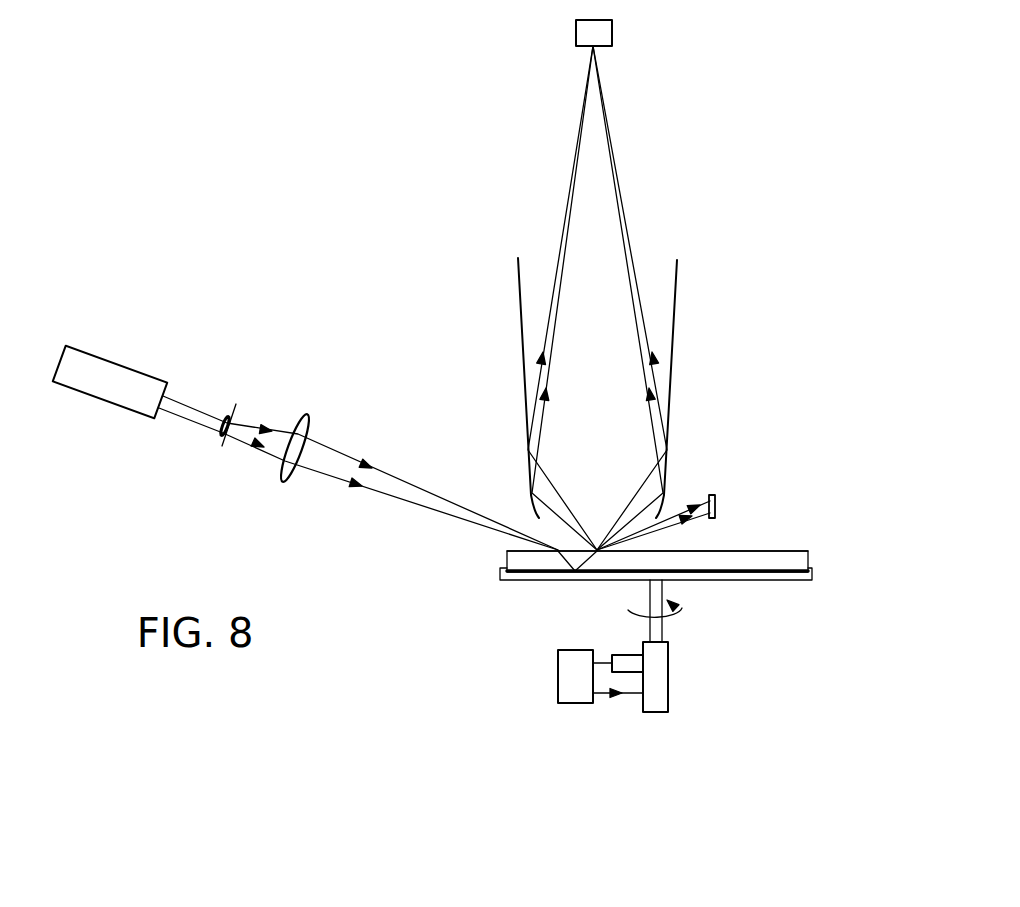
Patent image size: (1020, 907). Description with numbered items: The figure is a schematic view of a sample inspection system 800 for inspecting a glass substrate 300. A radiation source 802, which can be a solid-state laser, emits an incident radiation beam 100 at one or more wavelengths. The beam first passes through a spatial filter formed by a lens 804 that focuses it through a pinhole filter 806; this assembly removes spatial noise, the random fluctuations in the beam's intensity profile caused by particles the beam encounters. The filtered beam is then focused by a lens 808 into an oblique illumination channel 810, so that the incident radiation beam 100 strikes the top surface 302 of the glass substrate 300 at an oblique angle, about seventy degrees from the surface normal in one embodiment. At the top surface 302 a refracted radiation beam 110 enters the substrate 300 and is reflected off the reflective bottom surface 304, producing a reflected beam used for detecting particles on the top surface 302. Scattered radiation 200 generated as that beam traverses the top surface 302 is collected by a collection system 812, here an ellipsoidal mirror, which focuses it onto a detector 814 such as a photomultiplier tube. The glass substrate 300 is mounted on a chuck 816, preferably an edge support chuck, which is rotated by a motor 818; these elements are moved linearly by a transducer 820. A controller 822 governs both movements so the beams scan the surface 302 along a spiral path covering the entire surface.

The sample inspection system 800 is at (385, 325).
The radiation source 802 is at (103, 357).
The lens 804 is at (223, 437).
The pinhole filter 806 is at (237, 404).
The lens 808 is at (278, 470).
The incident radiation beam 100 is at (390, 488).
The oblique illumination channel 810 is at (460, 537).
The refracted radiation beam 110 is at (565, 560).
The glass substrate 300 is at (780, 557).
The top surface 302 is at (732, 552).
The reflective bottom surface 304 is at (778, 567).
The chuck 816 is at (767, 580).
The motor 818 is at (670, 678).
The transducer 820 is at (618, 655).
The controller 822 is at (573, 705).
The collection system 812 is at (524, 375).
The scattered radiation 200 is at (571, 204).
The detector 814 is at (612, 32).